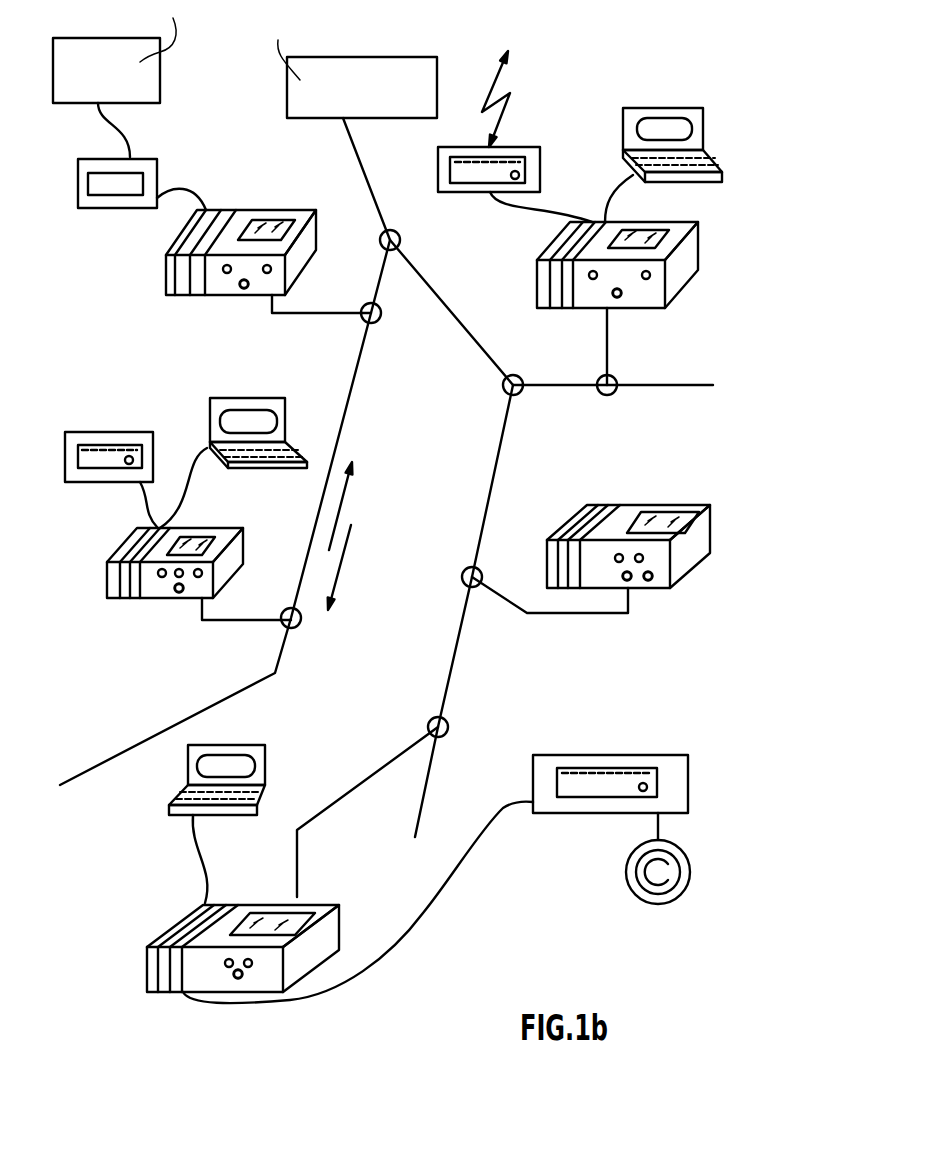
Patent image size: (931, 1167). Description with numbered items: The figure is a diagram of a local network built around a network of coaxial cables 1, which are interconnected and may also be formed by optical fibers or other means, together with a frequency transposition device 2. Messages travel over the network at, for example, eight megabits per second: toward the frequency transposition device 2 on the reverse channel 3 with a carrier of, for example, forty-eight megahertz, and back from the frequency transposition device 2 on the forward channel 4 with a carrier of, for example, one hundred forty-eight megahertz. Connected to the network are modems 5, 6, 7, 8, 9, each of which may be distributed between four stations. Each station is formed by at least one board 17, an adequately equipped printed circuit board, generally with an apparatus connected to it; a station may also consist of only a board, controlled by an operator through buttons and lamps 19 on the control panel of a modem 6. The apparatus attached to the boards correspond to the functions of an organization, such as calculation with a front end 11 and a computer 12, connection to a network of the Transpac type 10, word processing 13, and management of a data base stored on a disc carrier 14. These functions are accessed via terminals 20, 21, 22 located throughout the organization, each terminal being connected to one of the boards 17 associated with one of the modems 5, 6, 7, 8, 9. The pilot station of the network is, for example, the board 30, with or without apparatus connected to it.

The network of coaxial cables 1 is at (503, 430).
The frequency transposition device 2 is at (287, 95).
The reverse channel 3 is at (340, 512).
The forward channel 4 is at (342, 565).
The modem 5 is at (673, 287).
The modem 6 is at (591, 543).
The modem 7 is at (197, 563).
The modem 8 is at (335, 903).
The modem 9 is at (283, 210).
The network connection of the Transpac type 10 is at (507, 84).
The front end 11 is at (78, 200).
The computer 12 is at (161, 65).
The word processing apparatus 13 is at (125, 432).
The disc carrier 14 is at (607, 755).
The board 17 is at (125, 593).
The buttons and lamps 19 is at (244, 289).
The terminal 20 is at (287, 417).
The terminal 21 is at (658, 108).
The terminal 22 is at (267, 757).
The pilot station board 30 is at (632, 505).